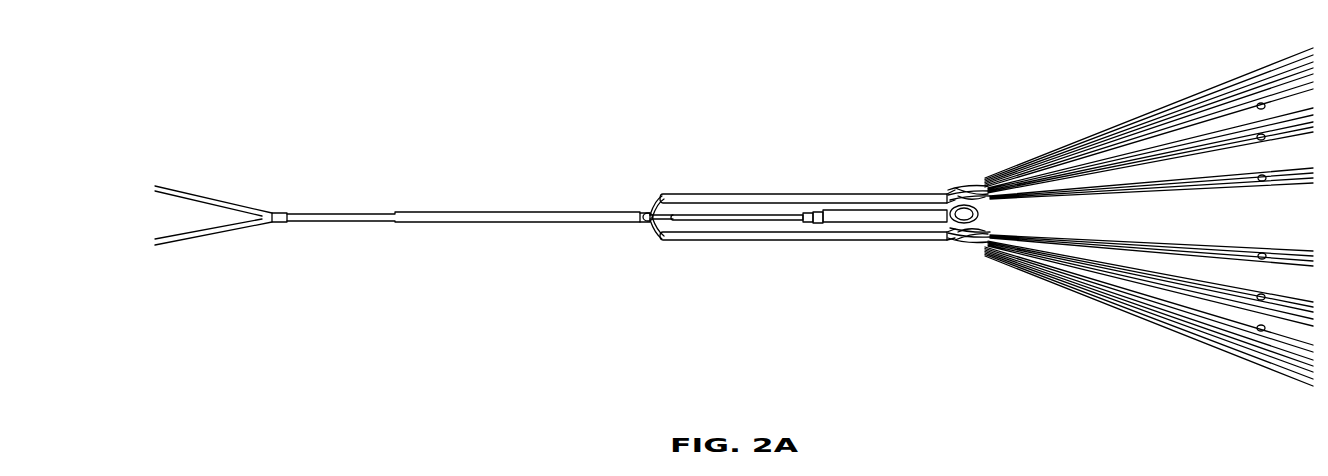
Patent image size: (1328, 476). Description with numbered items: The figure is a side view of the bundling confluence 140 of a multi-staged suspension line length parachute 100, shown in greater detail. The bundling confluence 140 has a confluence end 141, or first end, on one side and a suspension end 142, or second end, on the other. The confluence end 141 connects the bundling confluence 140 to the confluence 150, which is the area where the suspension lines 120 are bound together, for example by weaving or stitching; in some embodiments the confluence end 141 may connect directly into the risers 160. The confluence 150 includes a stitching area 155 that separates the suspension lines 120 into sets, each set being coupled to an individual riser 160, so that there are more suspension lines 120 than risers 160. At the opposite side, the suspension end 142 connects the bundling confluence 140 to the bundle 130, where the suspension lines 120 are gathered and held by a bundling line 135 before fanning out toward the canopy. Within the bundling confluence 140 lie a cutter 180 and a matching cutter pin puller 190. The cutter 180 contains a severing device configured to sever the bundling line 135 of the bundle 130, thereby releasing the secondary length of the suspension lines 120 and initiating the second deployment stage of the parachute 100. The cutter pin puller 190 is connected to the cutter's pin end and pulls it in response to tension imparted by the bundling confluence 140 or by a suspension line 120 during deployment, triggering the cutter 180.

The multi-staged suspension line length parachute 100 is at (558, 153).
The suspension lines 120 is at (1118, 118).
The bundle 130 is at (957, 183).
The bundling line 135 is at (966, 184).
The bundling confluence 140 is at (648, 184).
The confluence end 141 is at (644, 222).
The suspension end 142 is at (948, 238).
The confluence 150 is at (400, 211).
The stitching area 155 is at (277, 223).
The risers 160 is at (190, 243).
The cutter 180 is at (849, 223).
The cutter pin puller 190 is at (743, 218).